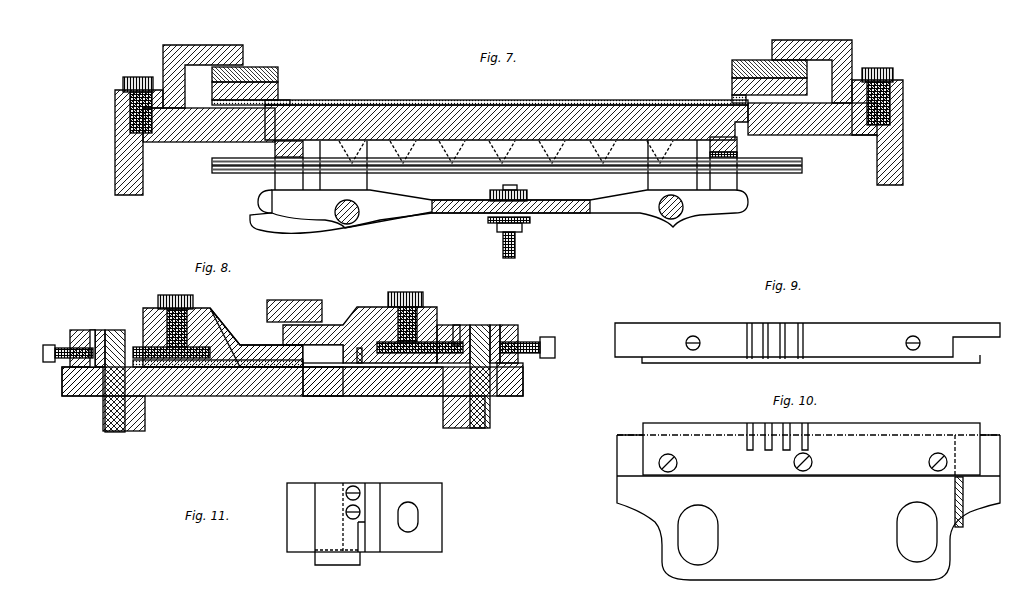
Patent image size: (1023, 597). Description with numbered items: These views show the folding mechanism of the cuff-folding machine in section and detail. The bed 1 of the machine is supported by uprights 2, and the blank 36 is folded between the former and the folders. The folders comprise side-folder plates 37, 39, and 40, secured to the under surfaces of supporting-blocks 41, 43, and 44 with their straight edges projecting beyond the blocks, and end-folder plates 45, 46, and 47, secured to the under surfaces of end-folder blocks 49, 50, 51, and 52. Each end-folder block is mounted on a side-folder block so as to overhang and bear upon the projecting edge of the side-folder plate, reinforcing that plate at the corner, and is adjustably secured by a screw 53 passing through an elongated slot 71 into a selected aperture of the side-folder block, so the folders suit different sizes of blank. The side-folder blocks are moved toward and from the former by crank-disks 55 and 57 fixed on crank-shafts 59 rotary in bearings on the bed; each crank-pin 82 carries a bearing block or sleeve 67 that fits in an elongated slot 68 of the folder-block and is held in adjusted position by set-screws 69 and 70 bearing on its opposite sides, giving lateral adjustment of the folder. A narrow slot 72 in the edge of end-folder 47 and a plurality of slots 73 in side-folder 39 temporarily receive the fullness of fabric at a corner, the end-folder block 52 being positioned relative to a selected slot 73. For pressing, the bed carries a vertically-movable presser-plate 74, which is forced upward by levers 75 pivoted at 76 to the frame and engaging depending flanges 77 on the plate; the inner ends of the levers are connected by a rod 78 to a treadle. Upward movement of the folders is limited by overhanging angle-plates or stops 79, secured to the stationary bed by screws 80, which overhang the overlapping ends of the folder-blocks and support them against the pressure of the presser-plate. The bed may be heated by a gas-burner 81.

In FIG. 7, the bed 1 is at (182, 143).
In FIG. 8, the bed 1 is at (400, 396).
In FIG. 7, the uprights 2 is at (116, 172).
In FIG. 7, the blank 36 is at (432, 101).
In FIG. 8, the side-folder plate 37 is at (202, 395).
In FIG. 9, the side-folder plate 39 is at (720, 361).
In FIG. 10, the side-folder plate 39 is at (707, 432).
In FIG. 8, the side-folder plate 40 is at (385, 396).
In FIG. 8, the side-folder supporting-block 41 is at (78, 330).
In FIG. 9, the side-folder supporting-block 43 is at (876, 327).
In FIG. 10, the side-folder supporting-block 43 is at (808, 507).
In FIG. 8, the side-folder supporting-block 44 is at (438, 325).
In FIG. 7, the end-folder plate 45 is at (292, 101).
In FIG. 8, the end-folder plate 45 is at (266, 396).
In FIG. 7, the end-folder plate 46 is at (732, 98).
In FIG. 8, the end-folder plate 47 is at (330, 396).
In FIG. 11, the end-folder plate 47 is at (338, 566).
In FIG. 7, the end-folder block 49 is at (279, 86).
In FIG. 8, the end-folder block 49 is at (223, 320).
In FIG. 7, the end-folder block 50 is at (732, 80).
In FIG. 7, the end-folder block 51 is at (272, 66).
In FIG. 8, the end-folder block 51 is at (366, 308).
In FIG. 11, the end-folder block 51 is at (376, 483).
In FIG. 7, the end-folder block 52 is at (736, 60).
In FIG. 8, the screw 53 is at (176, 295).
In FIG. 8, the crank-disk 55 is at (90, 396).
In FIG. 8, the crank-disk 57 is at (505, 392).
In FIG. 8, the crank-shaft 59 is at (126, 431).
In FIG. 8, the bearing block or sleeve 67 is at (99, 330).
In FIG. 8, the elongated slot 68 is at (92, 330).
In FIG. 10, the elongated slot 68 is at (712, 532).
In FIG. 8, the set-screw 69 is at (50, 345).
In FIG. 8, the set-screw 70 is at (136, 346).
In FIG. 9, the set-screw 70 is at (701, 344).
In FIG. 11, the elongated slot 71 is at (412, 514).
In FIG. 8, the slot 72 is at (360, 364).
In FIG. 11, the slot 72 is at (362, 552).
In FIG. 9, the slots 73 is at (795, 320).
In FIG. 10, the slots 73 is at (805, 422).
In FIG. 7, the vertically-movable section or plate 74 is at (583, 108).
In FIG. 7, the levers 75 is at (386, 218).
In FIG. 7, the pivot 76 is at (347, 224).
In FIG. 7, the depending flanges 77 is at (288, 186).
In FIG. 7, the rod 78 is at (516, 252).
In FIG. 7, the overhanging angle-plates or stops 79 is at (210, 45).
In FIG. 8, the overhanging angle-plates or stops 79 is at (300, 300).
In FIG. 7, the screws 80 is at (137, 76).
In FIG. 7, the gas-burner 81 is at (440, 172).
In FIG. 8, the crank-pins 82 is at (115, 330).